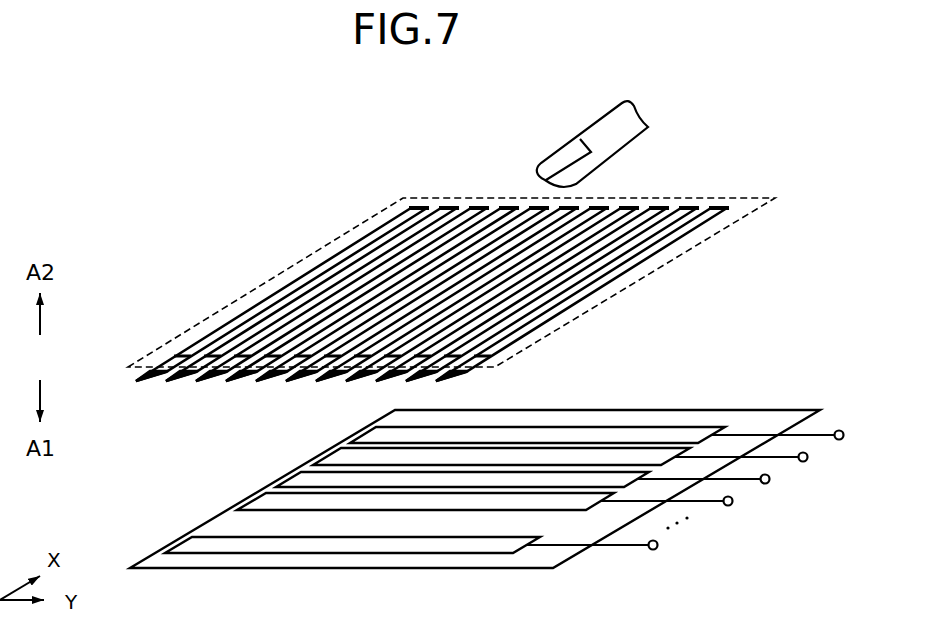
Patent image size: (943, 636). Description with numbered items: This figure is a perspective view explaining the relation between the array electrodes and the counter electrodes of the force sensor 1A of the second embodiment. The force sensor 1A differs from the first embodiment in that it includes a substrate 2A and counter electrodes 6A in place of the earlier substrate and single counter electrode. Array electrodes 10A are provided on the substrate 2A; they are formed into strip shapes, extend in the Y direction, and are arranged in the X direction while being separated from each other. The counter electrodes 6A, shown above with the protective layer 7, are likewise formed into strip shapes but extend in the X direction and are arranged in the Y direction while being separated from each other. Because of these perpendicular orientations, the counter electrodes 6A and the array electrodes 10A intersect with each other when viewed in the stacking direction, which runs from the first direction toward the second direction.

The force sensor 1A is at (251, 132).
The counter electrodes 6A is at (310, 278).
The protective layer 7 is at (751, 195).
The substrate 2A is at (771, 404).
The array electrodes 10A is at (188, 538).